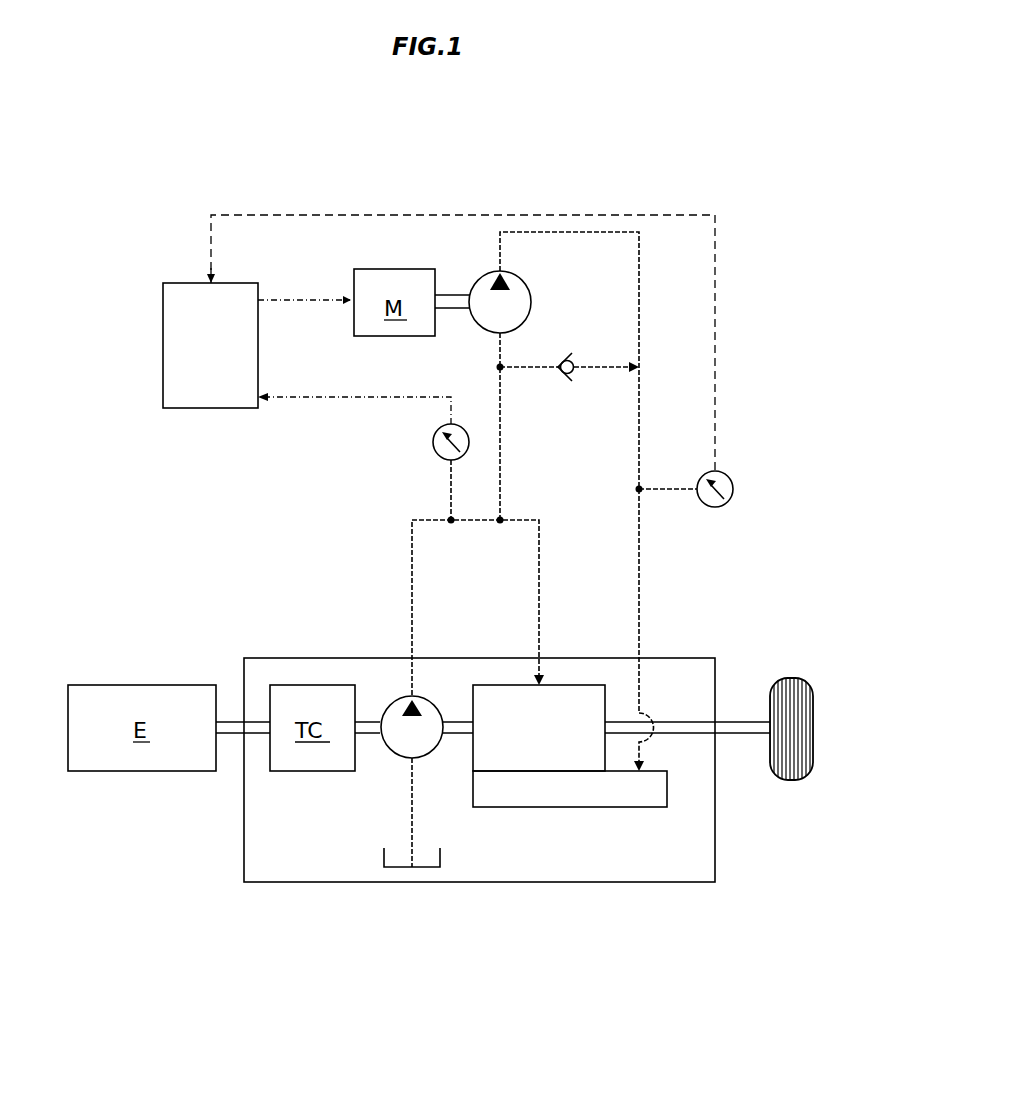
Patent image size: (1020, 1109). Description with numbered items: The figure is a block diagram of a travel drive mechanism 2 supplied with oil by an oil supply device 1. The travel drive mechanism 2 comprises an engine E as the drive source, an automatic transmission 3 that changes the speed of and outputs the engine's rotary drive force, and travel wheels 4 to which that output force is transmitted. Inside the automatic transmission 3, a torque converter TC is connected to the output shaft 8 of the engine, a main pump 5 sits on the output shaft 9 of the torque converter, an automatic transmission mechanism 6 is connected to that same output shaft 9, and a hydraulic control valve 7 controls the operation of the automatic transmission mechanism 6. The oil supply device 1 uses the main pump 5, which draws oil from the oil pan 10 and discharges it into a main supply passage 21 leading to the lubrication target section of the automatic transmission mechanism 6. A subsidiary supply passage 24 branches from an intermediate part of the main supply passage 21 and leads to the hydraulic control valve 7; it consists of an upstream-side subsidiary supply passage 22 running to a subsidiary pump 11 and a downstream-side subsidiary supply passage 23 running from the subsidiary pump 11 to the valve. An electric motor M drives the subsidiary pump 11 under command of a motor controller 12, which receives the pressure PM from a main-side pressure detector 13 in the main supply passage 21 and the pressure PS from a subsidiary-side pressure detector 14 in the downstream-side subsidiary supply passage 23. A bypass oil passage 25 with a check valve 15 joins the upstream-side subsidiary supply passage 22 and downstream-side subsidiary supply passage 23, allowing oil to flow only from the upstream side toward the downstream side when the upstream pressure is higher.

The oil supply device 1 is at (360, 200).
The travel drive mechanism 2 is at (778, 207).
The automatic transmission 3 is at (360, 884).
The travel wheels 4 is at (790, 782).
The main pump 5 is at (426, 758).
The automatic transmission mechanism 6 is at (546, 741).
The hydraulic control valve 7 is at (579, 803).
The output shaft 8 is at (226, 736).
The output shaft 9 is at (367, 736).
The oil pan 10 is at (383, 857).
The subsidiary pump 11 is at (532, 290).
The motor controller 12 is at (224, 361).
The main-side pressure detector 13 is at (433, 437).
The subsidiary-side pressure detector 14 is at (733, 486).
The check valve 15 is at (564, 375).
The main supply passage 21 is at (412, 588).
The upstream-side subsidiary supply passage 22 is at (500, 478).
The downstream-side subsidiary supply passage 23 is at (639, 315).
The subsidiary supply passage 24 is at (597, 230).
The bypass oil passage 25 is at (600, 372).